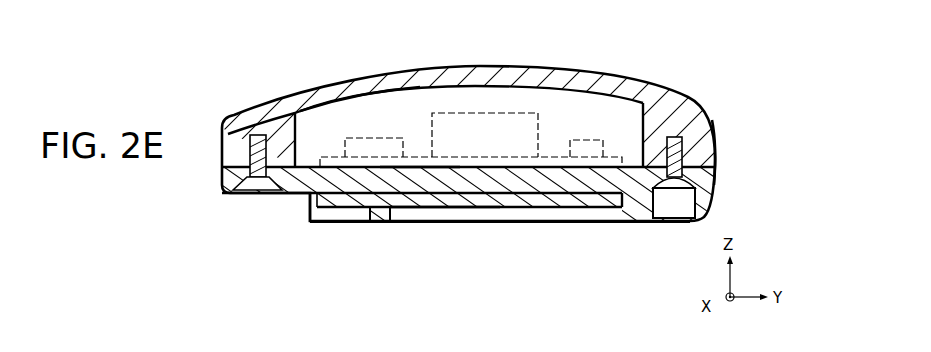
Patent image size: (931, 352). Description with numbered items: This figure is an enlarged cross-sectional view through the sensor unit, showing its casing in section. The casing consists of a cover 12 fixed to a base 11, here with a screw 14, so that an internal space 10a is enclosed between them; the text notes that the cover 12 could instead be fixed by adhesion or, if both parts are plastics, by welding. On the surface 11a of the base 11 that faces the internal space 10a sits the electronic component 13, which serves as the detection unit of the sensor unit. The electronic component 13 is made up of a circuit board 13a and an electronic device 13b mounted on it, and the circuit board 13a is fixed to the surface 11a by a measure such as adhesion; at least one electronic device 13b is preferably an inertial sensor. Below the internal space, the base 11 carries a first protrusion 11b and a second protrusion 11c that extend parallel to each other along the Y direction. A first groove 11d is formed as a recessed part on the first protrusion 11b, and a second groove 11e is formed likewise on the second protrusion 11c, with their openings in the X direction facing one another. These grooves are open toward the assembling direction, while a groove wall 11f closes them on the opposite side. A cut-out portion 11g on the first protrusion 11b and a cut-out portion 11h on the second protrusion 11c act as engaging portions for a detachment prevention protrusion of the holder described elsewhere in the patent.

The internal space 10a is at (333, 123).
The base 11 is at (715, 181).
The surface 11a is at (416, 158).
The first protrusion 11b is at (433, 242).
The second protrusion 11c is at (463, 214).
The first groove 11d is at (240, 209).
The second groove 11e is at (308, 206).
The groove wall 11f is at (538, 214).
The cut-out portion 11g is at (297, 238).
The cut-out portion 11h is at (381, 223).
The cover 12 is at (705, 104).
The electronic component 13 is at (531, 83).
The circuit board 13a is at (613, 158).
The electronic device 13b is at (493, 130).
The screw 14 is at (714, 154).